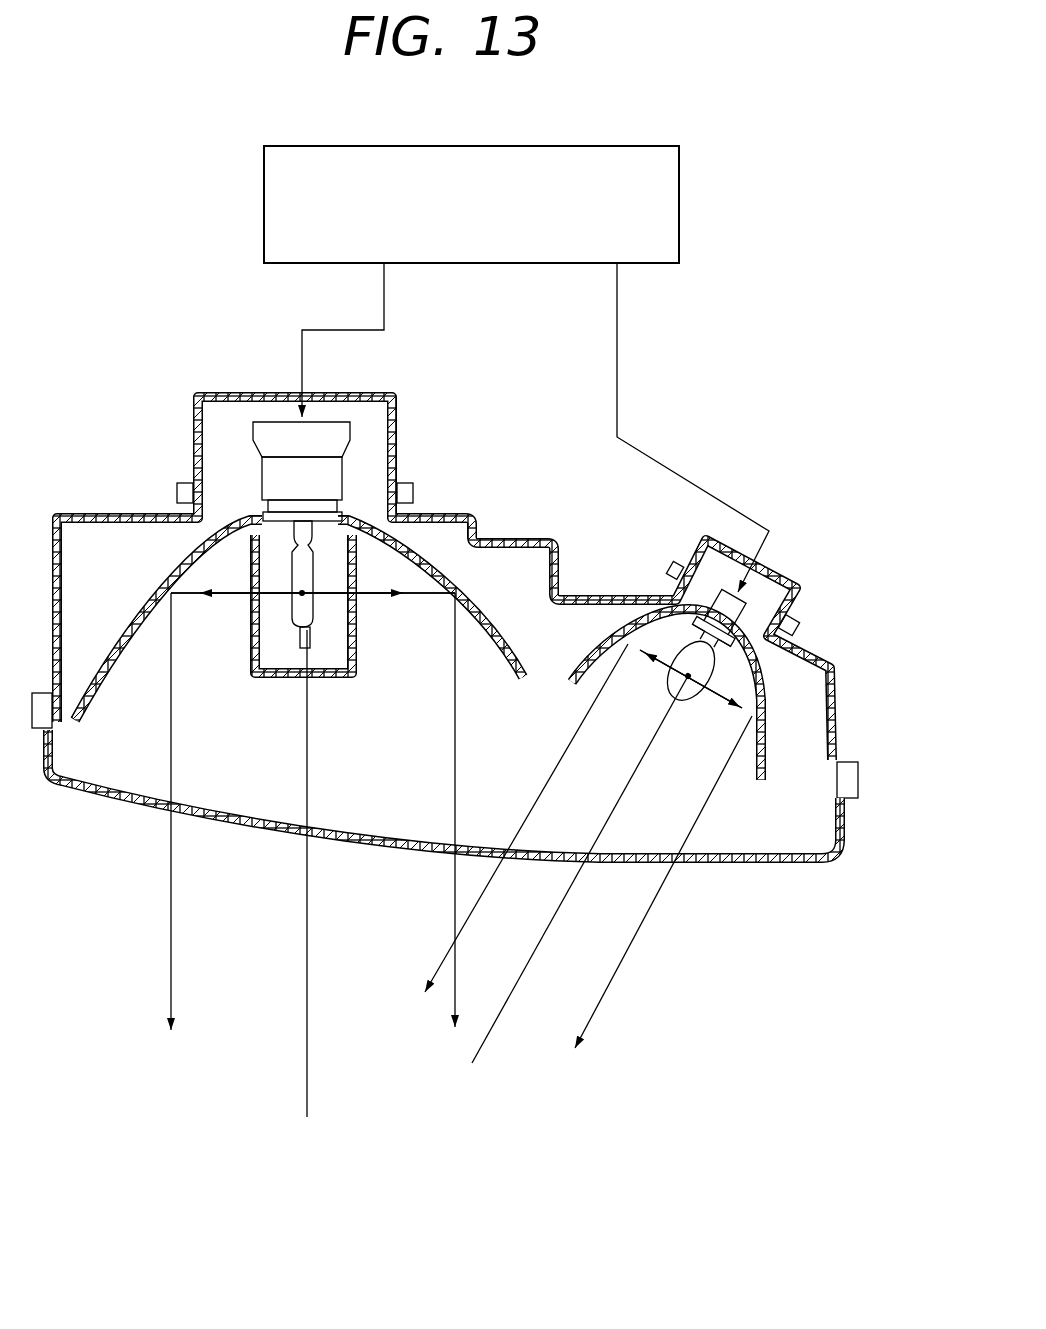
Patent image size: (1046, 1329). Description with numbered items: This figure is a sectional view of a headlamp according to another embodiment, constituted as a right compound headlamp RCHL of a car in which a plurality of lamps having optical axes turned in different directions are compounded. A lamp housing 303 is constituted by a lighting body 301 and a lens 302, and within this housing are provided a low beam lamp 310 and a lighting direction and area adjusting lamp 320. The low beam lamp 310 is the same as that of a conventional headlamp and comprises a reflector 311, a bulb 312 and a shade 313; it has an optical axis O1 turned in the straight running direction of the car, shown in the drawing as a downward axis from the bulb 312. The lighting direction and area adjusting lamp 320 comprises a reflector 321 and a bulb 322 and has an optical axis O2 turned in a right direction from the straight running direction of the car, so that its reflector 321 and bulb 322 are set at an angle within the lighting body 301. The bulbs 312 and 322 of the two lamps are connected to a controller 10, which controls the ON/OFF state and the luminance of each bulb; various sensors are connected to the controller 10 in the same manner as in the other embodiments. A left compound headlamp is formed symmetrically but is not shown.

The controller 10 is at (645, 142).
The right compound headlamp RCHL is at (115, 485).
The lighting body 301 is at (475, 511).
The lens 302 is at (345, 853).
The lamp housing 303 is at (792, 834).
The low beam lamp 310 is at (217, 672).
The reflector 311 is at (513, 675).
The bulb 312 is at (293, 622).
The shade 313 is at (346, 679).
The lighting direction and area adjusting lamp 320 is at (700, 733).
The reflector 321 is at (580, 684).
The bulb 322 is at (676, 690).
The optical axis O1 is at (313, 870).
The optical axis O2 is at (588, 868).